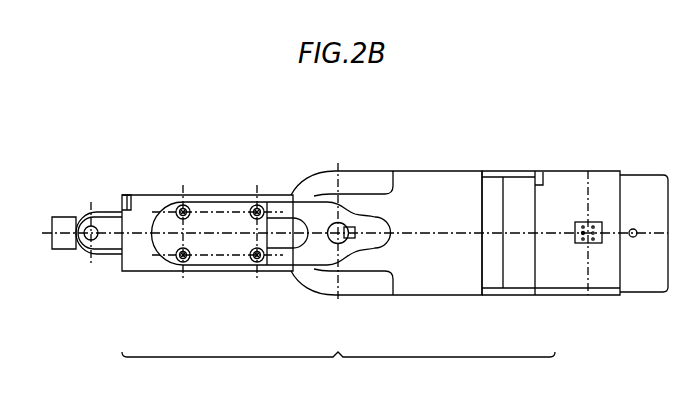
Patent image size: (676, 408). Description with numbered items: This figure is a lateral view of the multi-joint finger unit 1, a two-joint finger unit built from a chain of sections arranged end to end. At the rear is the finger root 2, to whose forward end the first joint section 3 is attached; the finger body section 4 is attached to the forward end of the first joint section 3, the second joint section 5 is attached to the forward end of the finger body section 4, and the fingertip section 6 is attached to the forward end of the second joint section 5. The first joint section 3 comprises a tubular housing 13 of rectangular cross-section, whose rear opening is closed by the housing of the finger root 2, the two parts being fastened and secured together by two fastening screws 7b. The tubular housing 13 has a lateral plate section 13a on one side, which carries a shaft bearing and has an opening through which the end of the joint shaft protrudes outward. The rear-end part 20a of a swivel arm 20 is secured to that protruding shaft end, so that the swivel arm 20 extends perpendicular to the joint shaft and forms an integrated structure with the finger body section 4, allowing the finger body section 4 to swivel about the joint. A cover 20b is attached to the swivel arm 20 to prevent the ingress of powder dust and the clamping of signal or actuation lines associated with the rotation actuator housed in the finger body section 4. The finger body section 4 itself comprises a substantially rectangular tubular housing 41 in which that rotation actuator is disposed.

The multi-joint finger unit 1 is at (348, 383).
The finger root 2 is at (573, 305).
The first joint section 3 is at (433, 306).
The finger body section 4 is at (247, 283).
The second joint section 5 is at (132, 283).
The fingertip section 6 is at (62, 262).
The fastening screws 7b is at (539, 174).
The tubular housing 13 is at (428, 177).
The lateral plate section 13a is at (463, 246).
The swivel arm 20 is at (308, 185).
The rear-end part 20a is at (343, 208).
The cover 20b is at (232, 220).
The tubular housing 41 is at (213, 266).